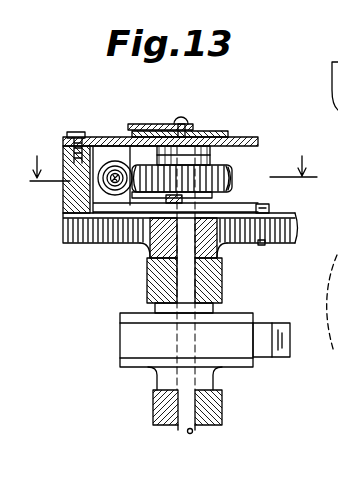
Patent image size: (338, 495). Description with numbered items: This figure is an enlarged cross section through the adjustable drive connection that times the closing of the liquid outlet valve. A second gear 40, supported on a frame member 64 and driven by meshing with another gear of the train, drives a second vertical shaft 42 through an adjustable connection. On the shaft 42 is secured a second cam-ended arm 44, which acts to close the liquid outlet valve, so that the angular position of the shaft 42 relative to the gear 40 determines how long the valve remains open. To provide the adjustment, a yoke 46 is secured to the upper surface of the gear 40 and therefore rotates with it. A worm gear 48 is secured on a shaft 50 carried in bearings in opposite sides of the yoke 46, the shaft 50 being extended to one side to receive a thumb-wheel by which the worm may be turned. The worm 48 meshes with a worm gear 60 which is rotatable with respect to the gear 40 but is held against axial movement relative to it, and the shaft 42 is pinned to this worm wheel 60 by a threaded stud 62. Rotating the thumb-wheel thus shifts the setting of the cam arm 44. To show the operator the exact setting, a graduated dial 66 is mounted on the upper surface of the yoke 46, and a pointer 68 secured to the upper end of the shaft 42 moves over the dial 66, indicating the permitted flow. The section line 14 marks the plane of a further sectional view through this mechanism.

The section line 14- 14 is at (168, 157).
The second gear 40 is at (72, 248).
The second vertical shaft 42 is at (182, 428).
The second cam-ended arm 44 is at (257, 348).
The yoke 46 is at (62, 147).
The worm gear 48 is at (75, 204).
The shaft 50 is at (115, 176).
The worm gear 60 is at (236, 182).
The threaded stud 62 is at (134, 200).
The frame member 64 is at (148, 283).
The graduated dial 66 is at (217, 136).
The pointer 68 is at (146, 124).